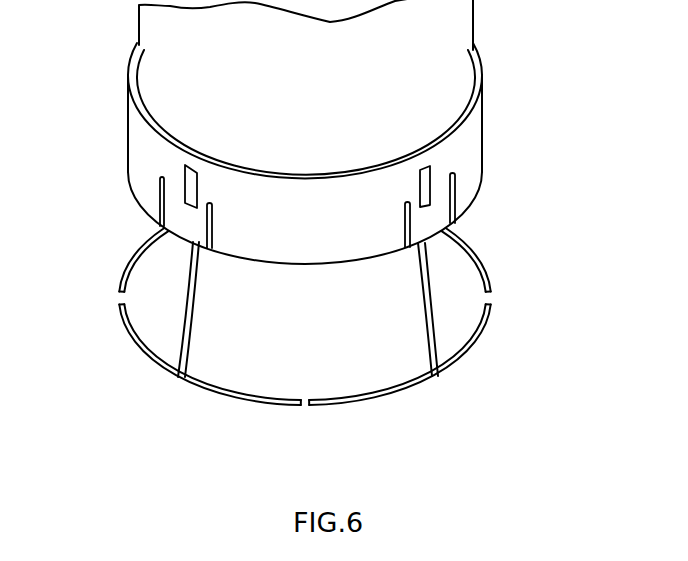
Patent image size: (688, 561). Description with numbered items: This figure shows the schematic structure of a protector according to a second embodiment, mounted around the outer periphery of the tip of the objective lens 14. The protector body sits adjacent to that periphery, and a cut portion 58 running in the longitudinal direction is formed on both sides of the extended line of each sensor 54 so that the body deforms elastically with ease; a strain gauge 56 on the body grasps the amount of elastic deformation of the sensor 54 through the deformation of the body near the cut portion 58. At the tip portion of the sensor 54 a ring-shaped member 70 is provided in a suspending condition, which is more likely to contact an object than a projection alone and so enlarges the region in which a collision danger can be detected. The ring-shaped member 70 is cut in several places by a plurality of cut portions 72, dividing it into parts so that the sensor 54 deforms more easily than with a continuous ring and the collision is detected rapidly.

The objective lens 14 is at (453, 33).
The sensor 54 is at (178, 347).
The strain gauge 56 is at (184, 170).
The cut portion 58 is at (200, 220).
The ring-shaped member 70 is at (118, 277).
The cut portions 72 is at (119, 301).